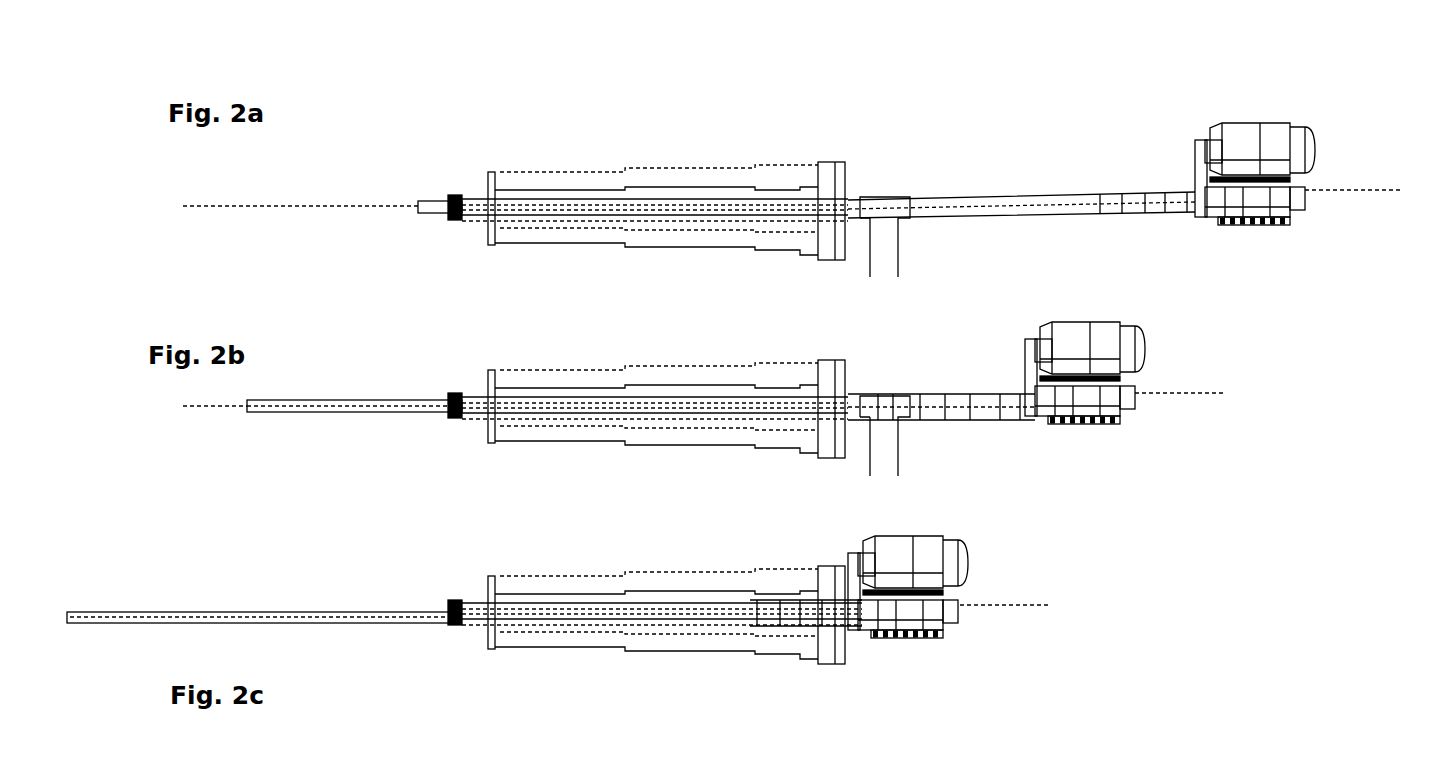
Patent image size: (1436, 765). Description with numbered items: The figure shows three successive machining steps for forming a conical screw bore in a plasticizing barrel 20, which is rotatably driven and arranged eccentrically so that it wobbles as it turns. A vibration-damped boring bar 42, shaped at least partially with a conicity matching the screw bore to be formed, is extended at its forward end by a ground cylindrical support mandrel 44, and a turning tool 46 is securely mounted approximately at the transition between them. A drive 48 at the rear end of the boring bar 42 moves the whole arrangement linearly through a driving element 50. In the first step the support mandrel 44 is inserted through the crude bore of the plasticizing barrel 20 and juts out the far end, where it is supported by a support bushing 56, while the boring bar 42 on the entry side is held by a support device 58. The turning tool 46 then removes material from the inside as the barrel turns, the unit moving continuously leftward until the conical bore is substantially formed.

In FIG. 2A, the plasticizing barrel 20 is at (545, 243).
In FIG. 2B, the plasticizing barrel 20 is at (553, 440).
In FIG. 2C, the plasticizing barrel 20 is at (565, 647).
In FIG. 2A, the boring bar 42 is at (1050, 195).
In FIG. 2B, the boring bar 42 is at (985, 402).
In FIG. 2C, the boring bar 42 is at (848, 626).
In FIG. 2A, the support mandrel 44 is at (428, 203).
In FIG. 2B, the support mandrel 44 is at (300, 401).
In FIG. 2C, the support mandrel 44 is at (288, 612).
In FIG. 2A, the turning tool 46 is at (848, 197).
In FIG. 2B, the turning tool 46 is at (672, 402).
In FIG. 2C, the turning tool 46 is at (497, 602).
In FIG. 2A, the drive 48 is at (1252, 128).
In FIG. 2B, the drive 48 is at (1080, 325).
In FIG. 2C, the drive 48 is at (925, 540).
In FIG. 2A, the driving element 50 is at (1200, 140).
In FIG. 2B, the driving element 50 is at (1030, 340).
In FIG. 2C, the driving element 50 is at (852, 553).
In FIG. 2A, the support bushing 56 is at (457, 195).
In FIG. 2B, the support bushing 56 is at (455, 393).
In FIG. 2C, the support bushing 56 is at (453, 600).
In FIG. 2A, the support device 58 is at (885, 262).
In FIG. 2B, the support device 58 is at (882, 425).